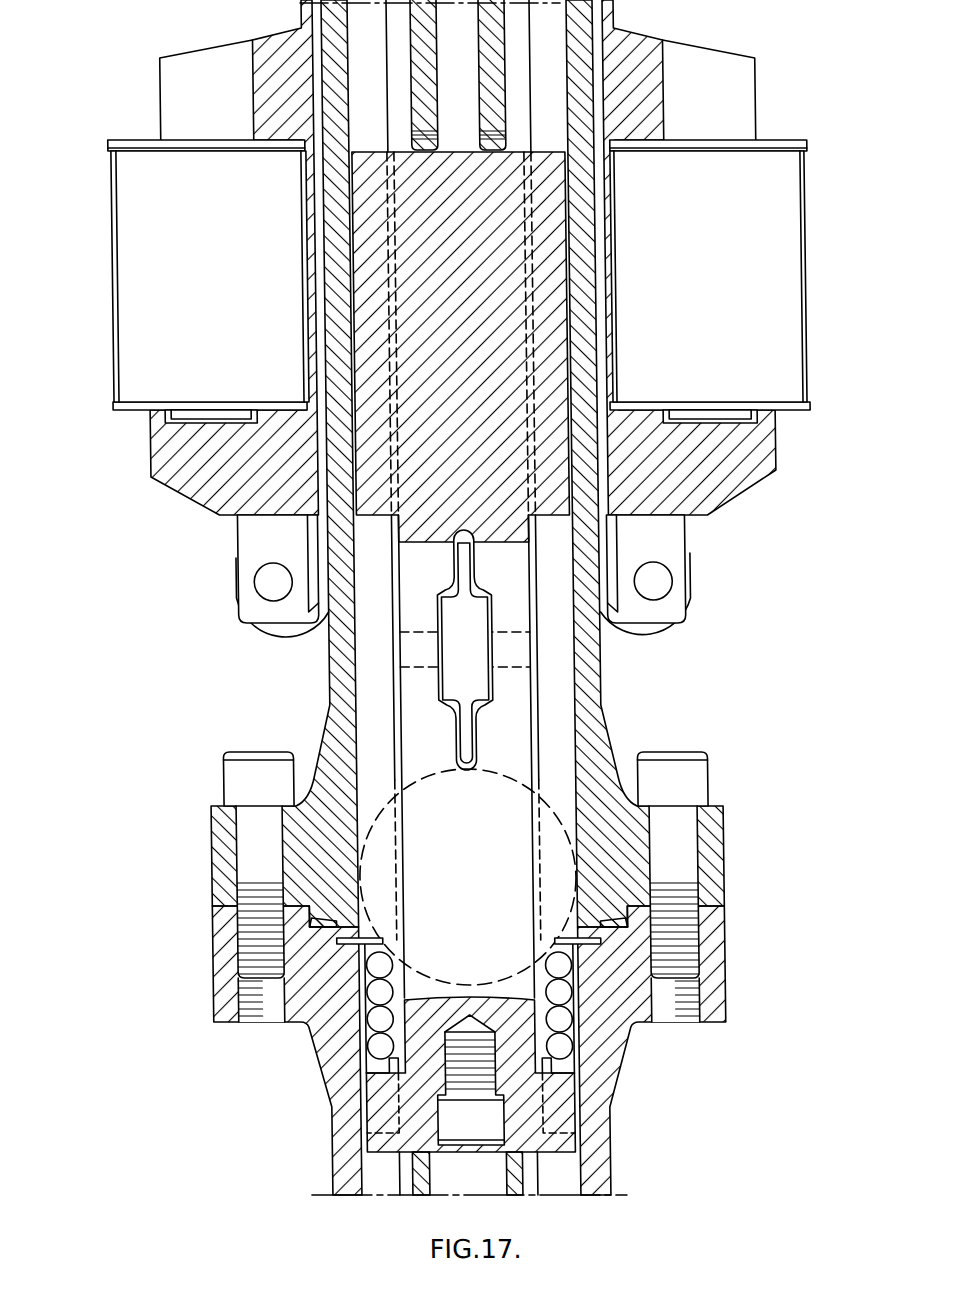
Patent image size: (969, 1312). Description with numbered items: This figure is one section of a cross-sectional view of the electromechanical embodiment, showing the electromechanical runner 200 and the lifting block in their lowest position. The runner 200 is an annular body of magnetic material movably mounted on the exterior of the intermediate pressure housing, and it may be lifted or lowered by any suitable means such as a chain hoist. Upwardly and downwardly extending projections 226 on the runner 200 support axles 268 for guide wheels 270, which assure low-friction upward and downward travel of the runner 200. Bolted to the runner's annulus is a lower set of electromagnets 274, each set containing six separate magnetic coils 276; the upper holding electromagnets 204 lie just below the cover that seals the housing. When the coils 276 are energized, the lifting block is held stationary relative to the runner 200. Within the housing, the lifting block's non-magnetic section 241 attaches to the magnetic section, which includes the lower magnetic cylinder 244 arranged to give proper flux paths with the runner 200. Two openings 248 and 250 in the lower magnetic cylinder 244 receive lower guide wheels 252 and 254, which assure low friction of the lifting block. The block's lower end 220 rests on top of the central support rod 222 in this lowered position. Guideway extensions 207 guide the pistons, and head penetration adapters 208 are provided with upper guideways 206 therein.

The electromechanical runner 200 is at (203, 50).
The upper holding electromagnets 204 is at (109, 272).
The upper guideways 206 is at (556, 1180).
The guideway extensions 207 is at (558, 713).
The head penetration adapters 208 is at (595, 1055).
The lower end of lifting block 220 is at (556, 1160).
The central support rod 222 is at (385, 1187).
The projections 226 is at (243, 545).
The non-magnetic section 241 is at (394, 685).
The lower magnetic cylinder 244 is at (461, 193).
The opening 248 is at (471, 587).
The opening 250 is at (533, 803).
The lower guide wheel 252 is at (451, 730).
The lower guide wheel 254 is at (372, 820).
The axles 268 is at (249, 585).
The guide wheels 270 is at (265, 632).
The lower set of electromagnets 274 is at (800, 193).
The magnetic coils 276 is at (663, 167).